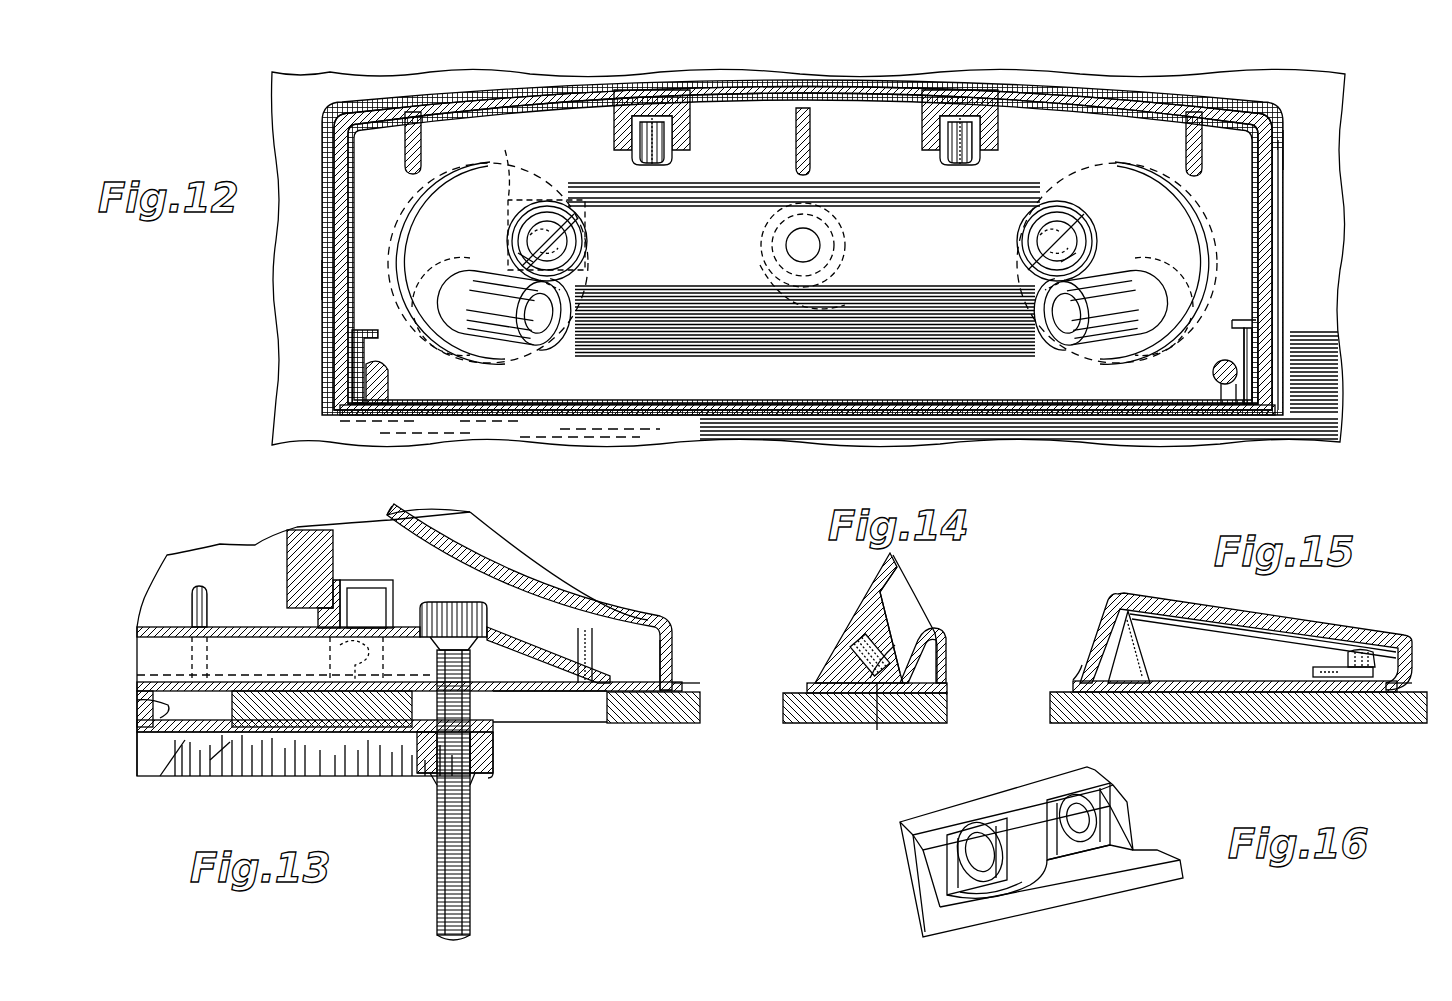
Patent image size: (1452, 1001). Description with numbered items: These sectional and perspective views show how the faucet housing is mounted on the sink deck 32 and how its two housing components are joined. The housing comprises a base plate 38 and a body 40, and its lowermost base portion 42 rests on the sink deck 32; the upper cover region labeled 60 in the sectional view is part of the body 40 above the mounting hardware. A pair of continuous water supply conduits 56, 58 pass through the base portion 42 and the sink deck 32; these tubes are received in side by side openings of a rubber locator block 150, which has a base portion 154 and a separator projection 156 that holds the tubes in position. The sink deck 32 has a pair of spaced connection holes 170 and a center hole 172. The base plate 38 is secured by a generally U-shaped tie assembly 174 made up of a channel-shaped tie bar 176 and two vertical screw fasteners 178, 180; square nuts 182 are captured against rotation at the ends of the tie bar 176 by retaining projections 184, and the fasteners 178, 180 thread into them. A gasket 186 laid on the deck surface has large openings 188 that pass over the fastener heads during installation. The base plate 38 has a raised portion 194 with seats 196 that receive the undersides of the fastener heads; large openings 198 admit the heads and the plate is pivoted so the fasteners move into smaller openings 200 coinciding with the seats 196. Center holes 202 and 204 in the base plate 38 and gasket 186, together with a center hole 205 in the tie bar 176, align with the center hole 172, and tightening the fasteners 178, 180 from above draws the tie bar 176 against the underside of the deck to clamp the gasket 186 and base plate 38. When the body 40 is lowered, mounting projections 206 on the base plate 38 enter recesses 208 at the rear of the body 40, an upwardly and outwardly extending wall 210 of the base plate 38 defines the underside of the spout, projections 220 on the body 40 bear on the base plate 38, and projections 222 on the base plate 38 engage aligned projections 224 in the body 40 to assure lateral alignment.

In FIG. 12, the sink deck 32 is at (274, 95).
In FIG. 13, the sink deck 32 is at (695, 724).
In FIG. 14, the sink deck 32 is at (820, 728).
In FIG. 15, the sink deck 32 is at (1248, 726).
In FIG. 12, the base plate 38 is at (735, 417).
In FIG. 13, the base plate 38 is at (648, 672).
In FIG. 14, the base plate 38 is at (935, 670).
In FIG. 15, the base plate 38 is at (1290, 696).
In FIG. 12, the body 40 is at (322, 262).
In FIG. 13, the body 40 is at (530, 545).
In FIG. 14, the body 40 is at (912, 586).
In FIG. 15, the body 40 is at (1264, 600).
In FIG. 12, the base portion 42 is at (1285, 212).
In FIG. 13, the base portion 42 is at (582, 602).
In FIG. 14, the base portion 42 is at (866, 590).
In FIG. 15, the base portion 42 is at (1107, 621).
In FIG. 12, the water supply conduit 56 is at (485, 330).
In FIG. 12, the water supply conduit 58 is at (1105, 335).
In FIG. 13, the cover top 60 is at (392, 508).
In FIG. 16, the locator block 150 is at (908, 886).
In FIG. 16, the base portion 154 is at (1068, 905).
In FIG. 16, the separator projection 156 is at (1040, 800).
In FIG. 12, the connection holes 170 is at (418, 222).
In FIG. 13, the connection holes 170 is at (608, 700).
In FIG. 12, the center hole 172 is at (850, 278).
In FIG. 13, the center hole 172 is at (150, 712).
In FIG. 12, the tie assembly 174 is at (513, 188).
In FIG. 13, the tie assembly 174 is at (222, 772).
In FIG. 13, the tie bar 176 is at (310, 770).
In FIG. 12, the fastener 178 is at (1030, 235).
In FIG. 13, the fastener 178 is at (472, 860).
In FIG. 12, the fastener 180 is at (538, 225).
In FIG. 13, the square nuts 182 is at (495, 748).
In FIG. 13, the retaining projections 184 is at (436, 782).
In FIG. 12, the gasket 186 is at (1285, 160).
In FIG. 13, the gasket 186 is at (676, 683).
In FIG. 14, the gasket 186 is at (808, 685).
In FIG. 15, the gasket 186 is at (1075, 683).
In FIG. 12, the large openings 188 is at (442, 332).
In FIG. 12, the raised portion 194 is at (735, 210).
In FIG. 13, the raised portion 194 is at (140, 625).
In FIG. 14, the raised portion 194 is at (938, 648).
In FIG. 12, the seats 196 is at (522, 218).
In FIG. 13, the seats 196 is at (462, 602).
In FIG. 12, the large openings 198 is at (546, 330).
In FIG. 12, the smaller openings 200 is at (520, 246).
In FIG. 13, the smaller openings 200 is at (436, 640).
In FIG. 12, the center hole 202 is at (806, 230).
In FIG. 13, the center hole 202 is at (192, 625).
In FIG. 12, the center hole 204 is at (838, 252).
In FIG. 13, the center hole 204 is at (175, 680).
In FIG. 12, the center hole 205 is at (778, 260).
In FIG. 13, the center hole 205 is at (175, 770).
In FIG. 12, the mounting projections 206 is at (656, 128).
In FIG. 13, the mounting projections 206 is at (330, 654).
In FIG. 14, the mounting projections 206 is at (858, 650).
In FIG. 12, the recesses 208 is at (645, 125).
In FIG. 13, the recesses 208 is at (355, 600).
In FIG. 14, the recesses 208 is at (890, 645).
In FIG. 12, the wall 210 is at (875, 417).
In FIG. 15, the wall 210 is at (1410, 660).
In FIG. 12, the projections 220 is at (412, 120).
In FIG. 13, the projections 220 is at (207, 585).
In FIG. 14, the projections 220 is at (883, 719).
In FIG. 15, the projections 220 is at (1140, 650).
In FIG. 12, the projections 222 is at (352, 346).
In FIG. 15, the projections 222 is at (1328, 664).
In FIG. 12, the projections 224 is at (366, 380).
In FIG. 15, the projections 224 is at (1362, 652).